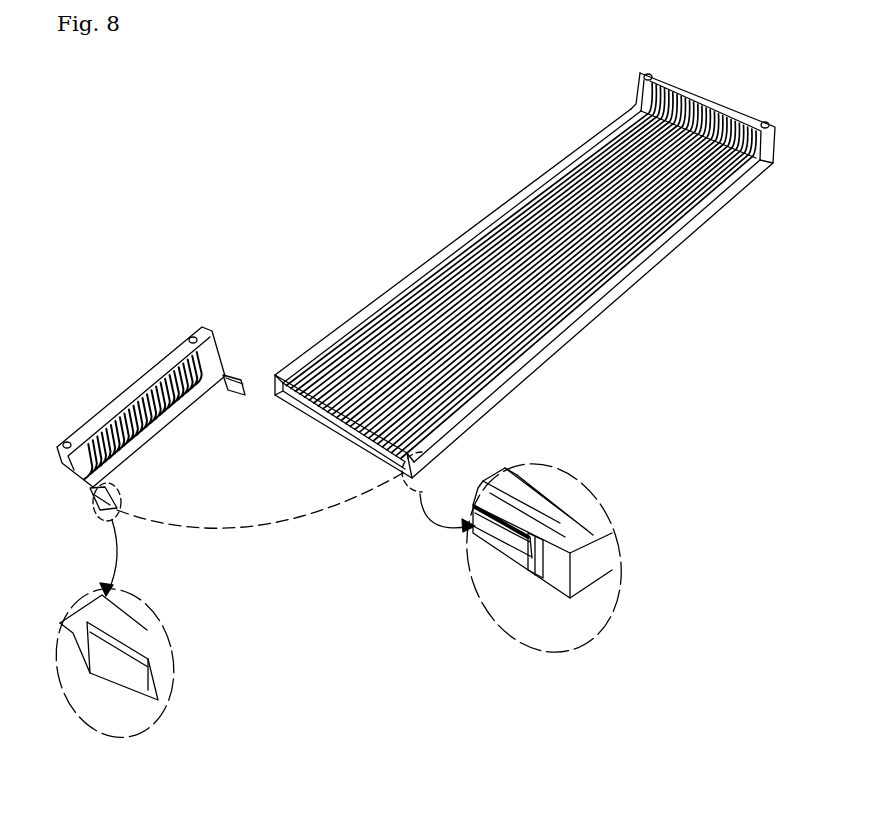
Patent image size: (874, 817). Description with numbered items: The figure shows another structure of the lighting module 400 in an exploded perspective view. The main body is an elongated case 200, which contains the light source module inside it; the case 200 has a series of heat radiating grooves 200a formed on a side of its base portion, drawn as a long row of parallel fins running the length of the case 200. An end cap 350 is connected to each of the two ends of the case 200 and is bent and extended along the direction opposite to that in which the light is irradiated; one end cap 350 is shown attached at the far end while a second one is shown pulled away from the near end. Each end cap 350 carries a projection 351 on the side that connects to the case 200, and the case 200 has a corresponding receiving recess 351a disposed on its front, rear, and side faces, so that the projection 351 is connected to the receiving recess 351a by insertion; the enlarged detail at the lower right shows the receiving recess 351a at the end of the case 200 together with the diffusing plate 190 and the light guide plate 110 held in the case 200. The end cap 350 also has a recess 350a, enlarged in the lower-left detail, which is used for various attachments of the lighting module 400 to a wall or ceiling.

The lighting module 400 is at (386, 215).
The case 200 is at (702, 216).
The heat radiating groove 200a is at (552, 200).
The end cap 350 is at (775, 157).
The recess 350a is at (204, 327).
The projection 351 is at (235, 377).
The diffusing plate 190 is at (490, 540).
The light guide plate 110 is at (508, 538).
The receiving recess 351a is at (533, 552).